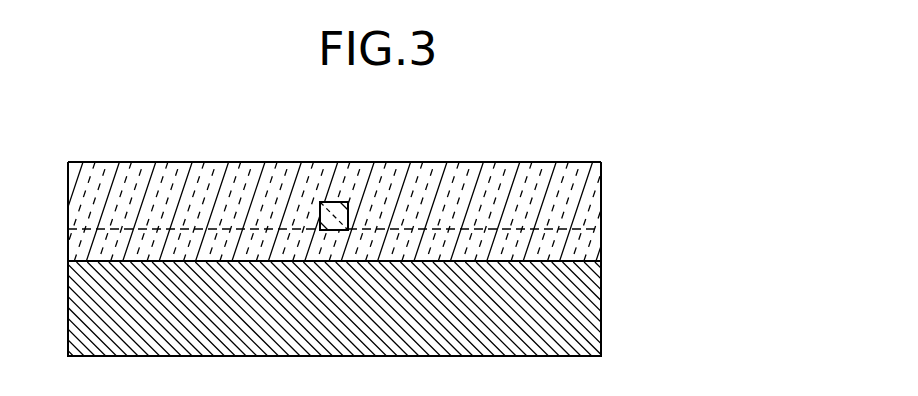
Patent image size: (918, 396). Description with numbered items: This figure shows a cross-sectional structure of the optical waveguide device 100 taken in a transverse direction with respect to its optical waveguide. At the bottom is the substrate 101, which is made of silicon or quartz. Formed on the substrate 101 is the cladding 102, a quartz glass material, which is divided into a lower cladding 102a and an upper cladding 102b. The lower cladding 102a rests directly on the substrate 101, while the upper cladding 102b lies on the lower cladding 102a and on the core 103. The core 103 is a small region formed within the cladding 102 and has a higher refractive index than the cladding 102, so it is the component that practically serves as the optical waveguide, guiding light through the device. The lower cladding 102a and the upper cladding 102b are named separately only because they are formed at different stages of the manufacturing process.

The optical waveguide device 100 is at (632, 140).
The substrate 101 is at (592, 307).
The cladding 102 is at (697, 182).
The lower cladding 102a is at (592, 243).
The upper cladding 102b is at (592, 195).
The core 103 is at (337, 202).